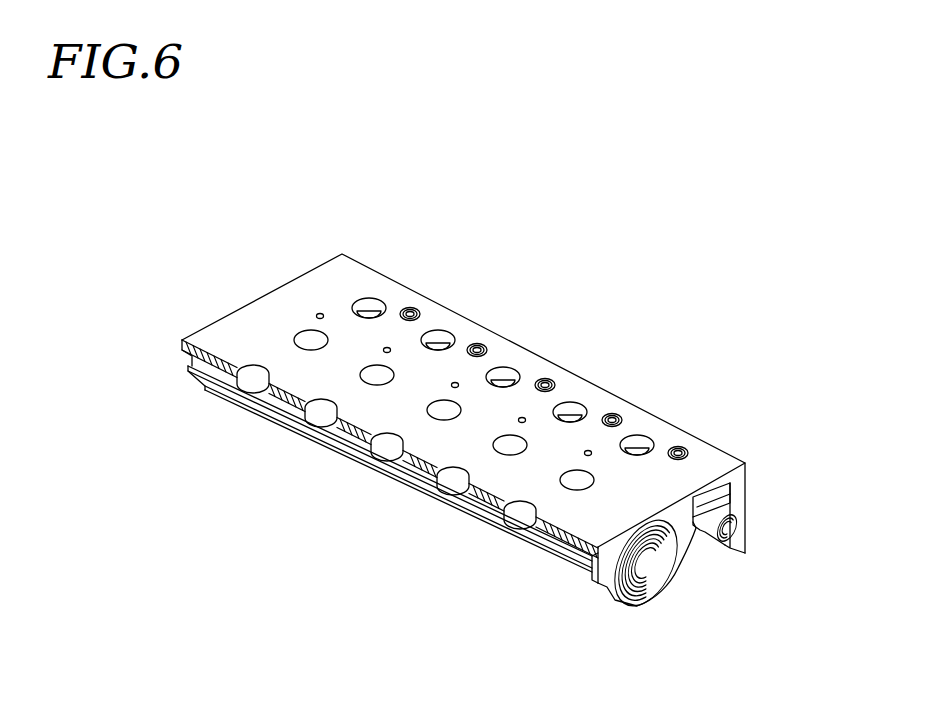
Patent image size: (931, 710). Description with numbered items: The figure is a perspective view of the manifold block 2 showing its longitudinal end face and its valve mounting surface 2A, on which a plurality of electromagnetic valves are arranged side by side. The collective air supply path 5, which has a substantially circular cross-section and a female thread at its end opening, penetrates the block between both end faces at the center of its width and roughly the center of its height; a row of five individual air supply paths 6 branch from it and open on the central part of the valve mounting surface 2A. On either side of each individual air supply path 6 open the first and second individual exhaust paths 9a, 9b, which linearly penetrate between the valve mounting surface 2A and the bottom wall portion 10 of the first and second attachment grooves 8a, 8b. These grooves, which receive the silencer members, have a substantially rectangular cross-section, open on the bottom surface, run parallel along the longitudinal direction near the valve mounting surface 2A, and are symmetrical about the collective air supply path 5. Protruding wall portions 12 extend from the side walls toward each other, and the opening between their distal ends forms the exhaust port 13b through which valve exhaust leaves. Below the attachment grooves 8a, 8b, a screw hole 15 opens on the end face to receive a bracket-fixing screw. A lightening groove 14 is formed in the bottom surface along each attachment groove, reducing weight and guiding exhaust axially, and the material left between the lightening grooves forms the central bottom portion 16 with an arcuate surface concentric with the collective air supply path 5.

The manifold block 2 is at (465, 222).
The valve mounting surface 2A is at (308, 302).
The collective air supply path 5 is at (642, 565).
The individual air supply path 6 is at (380, 374).
The first attachment groove 8a is at (452, 496).
The second attachment groove 8b is at (732, 495).
The first individual exhaust path 9a is at (252, 372).
The second individual exhaust path 9b is at (441, 338).
The bottom wall portion 10 is at (573, 581).
The protruding wall portion 12 is at (595, 580).
The exhaust port 13b is at (707, 531).
The lightening groove 14 is at (690, 558).
The screw hole 15 is at (740, 530).
The central bottom portion 16 is at (627, 607).